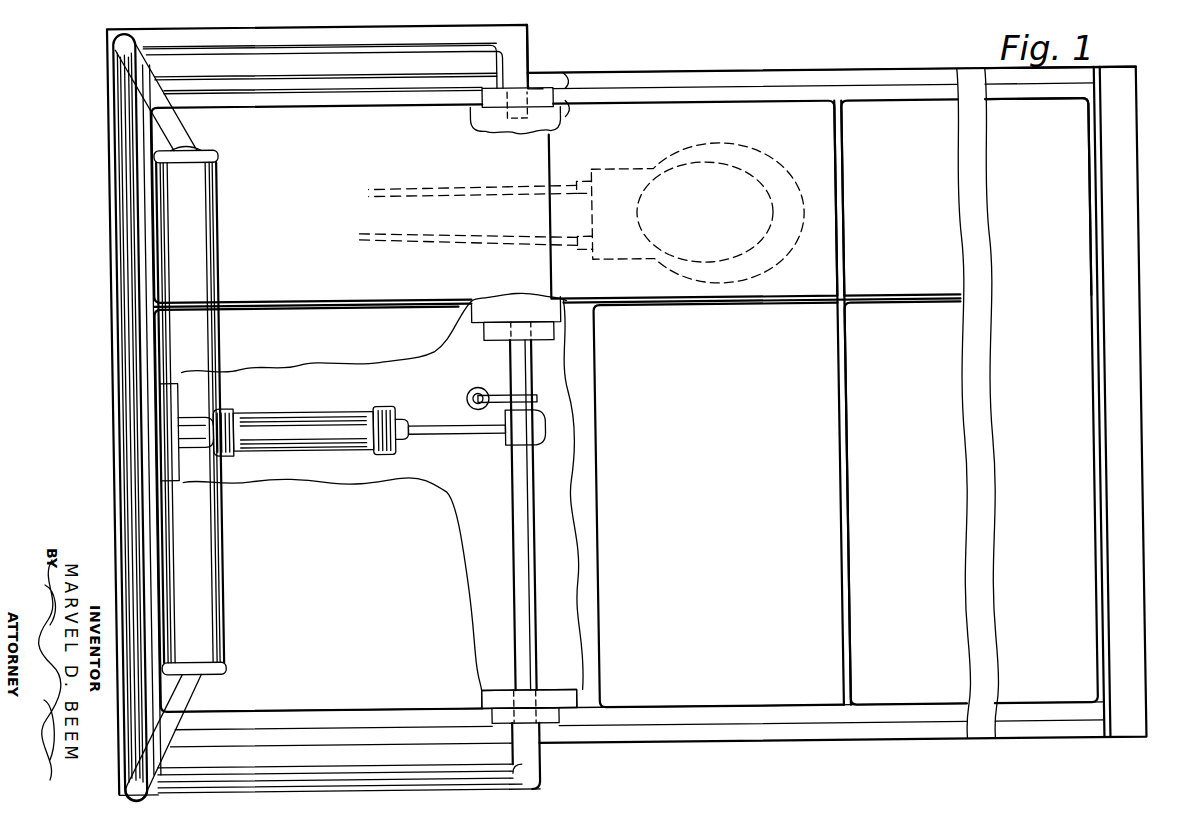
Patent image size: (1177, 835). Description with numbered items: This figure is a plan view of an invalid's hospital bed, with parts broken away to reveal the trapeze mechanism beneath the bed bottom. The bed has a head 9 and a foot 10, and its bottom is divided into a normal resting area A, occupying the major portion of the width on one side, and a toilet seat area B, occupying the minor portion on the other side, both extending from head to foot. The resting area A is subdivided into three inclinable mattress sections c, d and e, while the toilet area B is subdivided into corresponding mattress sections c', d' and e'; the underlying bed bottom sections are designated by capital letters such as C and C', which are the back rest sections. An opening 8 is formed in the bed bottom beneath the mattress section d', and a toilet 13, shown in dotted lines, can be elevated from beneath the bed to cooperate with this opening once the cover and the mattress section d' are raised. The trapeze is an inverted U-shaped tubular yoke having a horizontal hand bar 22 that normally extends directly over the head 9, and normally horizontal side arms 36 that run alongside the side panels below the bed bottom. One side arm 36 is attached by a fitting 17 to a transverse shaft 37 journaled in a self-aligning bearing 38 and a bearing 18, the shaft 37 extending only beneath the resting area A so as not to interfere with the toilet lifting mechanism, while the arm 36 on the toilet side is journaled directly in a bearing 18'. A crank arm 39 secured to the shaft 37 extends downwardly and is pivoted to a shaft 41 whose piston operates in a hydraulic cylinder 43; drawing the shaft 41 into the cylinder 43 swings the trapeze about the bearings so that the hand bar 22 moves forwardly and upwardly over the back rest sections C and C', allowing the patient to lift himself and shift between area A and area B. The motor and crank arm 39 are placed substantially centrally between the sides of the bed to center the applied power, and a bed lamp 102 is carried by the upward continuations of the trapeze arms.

The opening 8 is at (630, 120).
The head 9 is at (113, 159).
The foot 10 is at (1113, 744).
The toilet 13 is at (715, 285).
The fitting 17 is at (537, 795).
The bearing 18 is at (530, 737).
The bearing 18' is at (353, 73).
The hand bar 22 is at (160, 426).
The horizontal side arms 36 is at (333, 763).
The transverse shaft 37 is at (534, 510).
The self-aligning bearing 38 is at (497, 340).
The crank arm 39 is at (507, 445).
The shaft 41 is at (452, 433).
The hydraulic cylinder 43 is at (333, 409).
The bed lamp 102 is at (221, 522).
The normal resting area A is at (1077, 400).
The toilet seat area B is at (1075, 196).
The bed bottom section C is at (529, 680).
The bed bottom section C' is at (513, 127).
The mattress section c is at (317, 509).
The mattress section c' is at (318, 203).
The mattress section d is at (718, 505).
The mattress section d' is at (692, 200).
The mattress section e is at (905, 502).
The mattress section e' is at (900, 197).